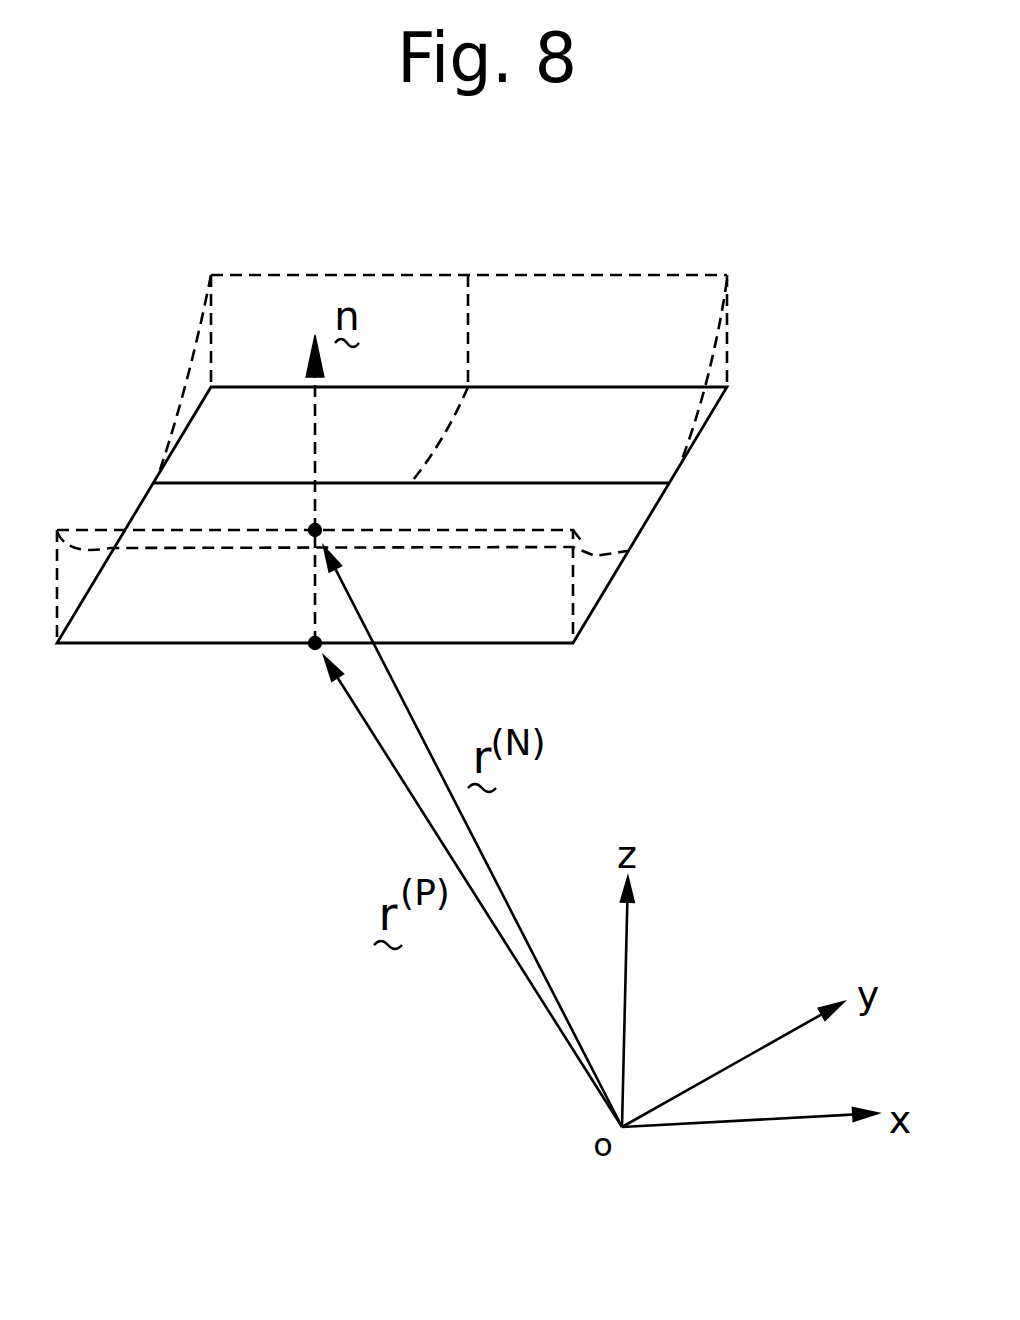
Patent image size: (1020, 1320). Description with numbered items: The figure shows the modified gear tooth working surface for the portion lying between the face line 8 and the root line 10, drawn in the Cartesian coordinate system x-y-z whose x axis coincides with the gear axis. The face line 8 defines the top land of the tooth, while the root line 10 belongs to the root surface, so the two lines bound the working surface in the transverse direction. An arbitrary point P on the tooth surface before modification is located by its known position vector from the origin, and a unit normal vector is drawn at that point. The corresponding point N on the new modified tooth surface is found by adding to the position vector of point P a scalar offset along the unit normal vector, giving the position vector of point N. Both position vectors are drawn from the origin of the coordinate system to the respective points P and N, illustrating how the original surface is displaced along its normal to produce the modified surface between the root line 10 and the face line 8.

The face line 8 is at (568, 387).
The root line 10 is at (137, 643).
The arbitrary point on the new modified tooth surface N is at (293, 505).
The arbitrary point on the gear tooth surface before modification P is at (305, 671).